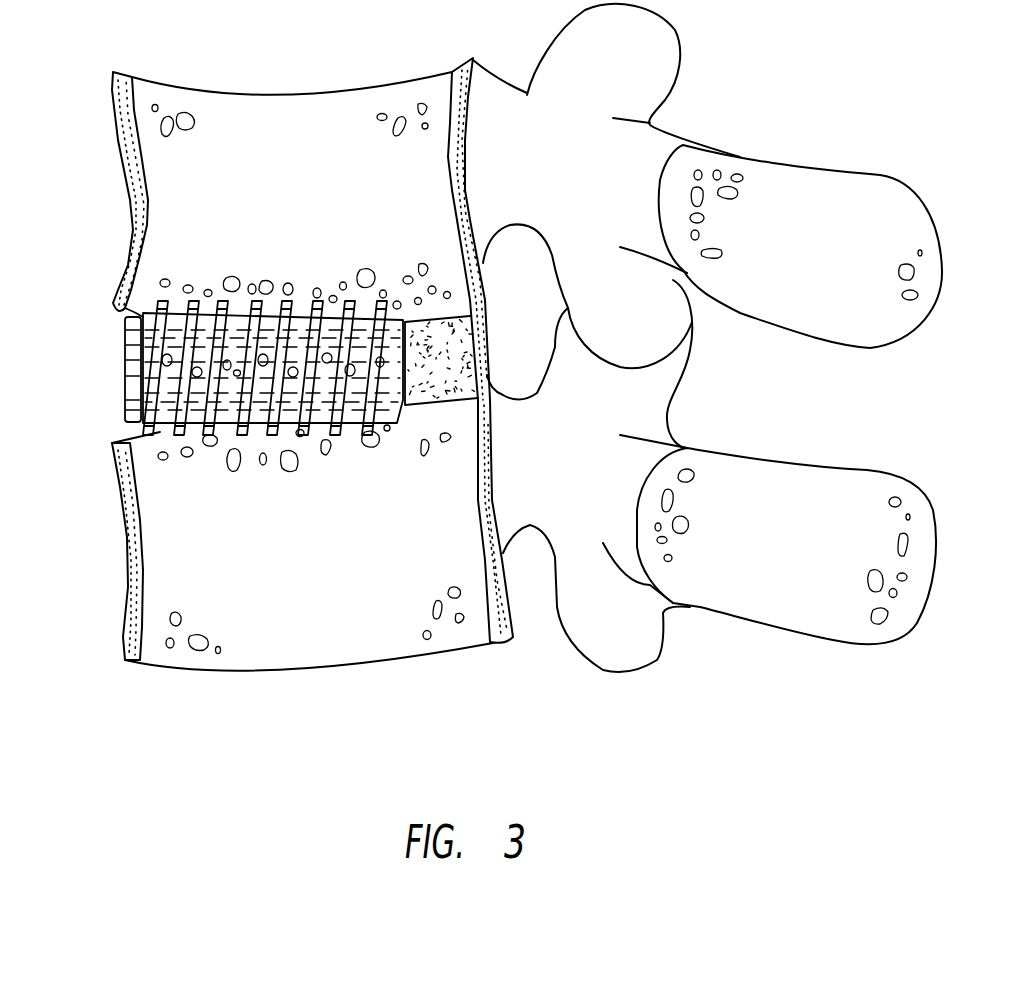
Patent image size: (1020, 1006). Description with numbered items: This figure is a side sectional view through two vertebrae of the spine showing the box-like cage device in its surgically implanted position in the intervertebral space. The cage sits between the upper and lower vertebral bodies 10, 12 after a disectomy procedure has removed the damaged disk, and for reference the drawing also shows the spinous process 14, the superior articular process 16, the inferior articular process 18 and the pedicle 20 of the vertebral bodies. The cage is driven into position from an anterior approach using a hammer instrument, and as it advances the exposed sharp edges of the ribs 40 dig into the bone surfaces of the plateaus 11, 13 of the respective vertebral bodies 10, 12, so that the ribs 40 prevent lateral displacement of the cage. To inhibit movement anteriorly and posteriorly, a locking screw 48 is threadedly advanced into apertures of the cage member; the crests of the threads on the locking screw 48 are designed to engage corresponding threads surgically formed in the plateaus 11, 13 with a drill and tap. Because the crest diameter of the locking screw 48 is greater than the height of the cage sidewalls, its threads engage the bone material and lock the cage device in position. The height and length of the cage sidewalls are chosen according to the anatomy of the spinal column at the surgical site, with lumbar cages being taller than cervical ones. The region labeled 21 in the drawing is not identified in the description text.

The vertebral body 10 is at (130, 230).
The vertebral body 12 is at (125, 523).
The plateau 11 is at (467, 307).
The plateau 13 is at (457, 407).
The spinous process 14 is at (847, 250).
The superior articular process 16 is at (621, 64).
The inferior articular process 18 is at (634, 332).
The pedicle 20 is at (544, 169).
The bone graft 21 is at (460, 332).
The ribs 40 is at (273, 313).
The locking screw 48 is at (125, 362).